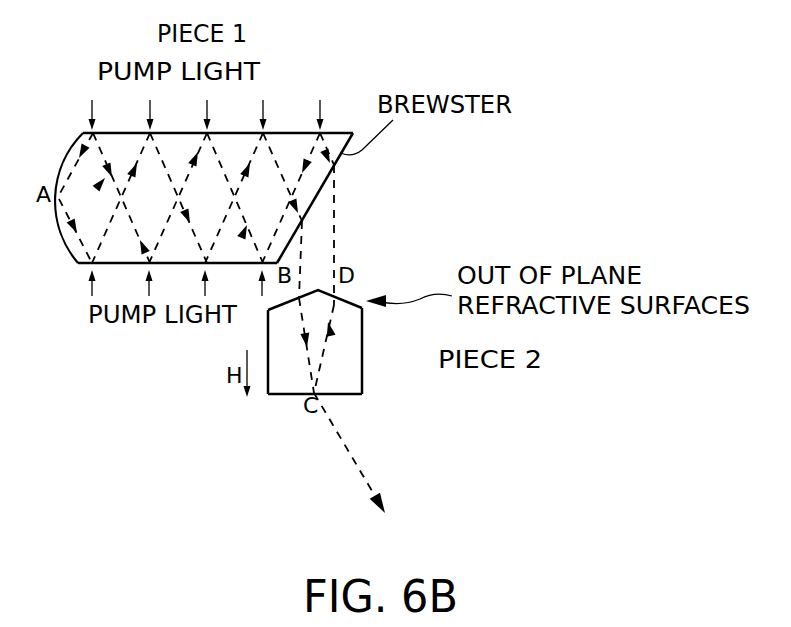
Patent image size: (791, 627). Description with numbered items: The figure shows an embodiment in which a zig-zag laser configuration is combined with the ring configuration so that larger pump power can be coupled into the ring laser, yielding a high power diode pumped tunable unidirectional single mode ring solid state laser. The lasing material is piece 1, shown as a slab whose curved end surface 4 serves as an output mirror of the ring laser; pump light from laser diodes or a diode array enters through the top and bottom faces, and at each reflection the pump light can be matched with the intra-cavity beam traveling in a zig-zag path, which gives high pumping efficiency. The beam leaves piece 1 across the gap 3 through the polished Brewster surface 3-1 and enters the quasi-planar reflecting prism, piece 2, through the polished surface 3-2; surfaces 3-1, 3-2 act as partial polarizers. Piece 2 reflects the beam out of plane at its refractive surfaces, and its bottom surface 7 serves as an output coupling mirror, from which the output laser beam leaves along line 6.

The piece 1 is at (227, 173).
The piece 2 is at (341, 353).
The gap 3 is at (366, 236).
The surface 3-1 is at (334, 170).
The surface 3-2 is at (356, 301).
The surface 4 is at (58, 148).
The output laser beam path 6 is at (362, 460).
The surface 7 is at (280, 395).